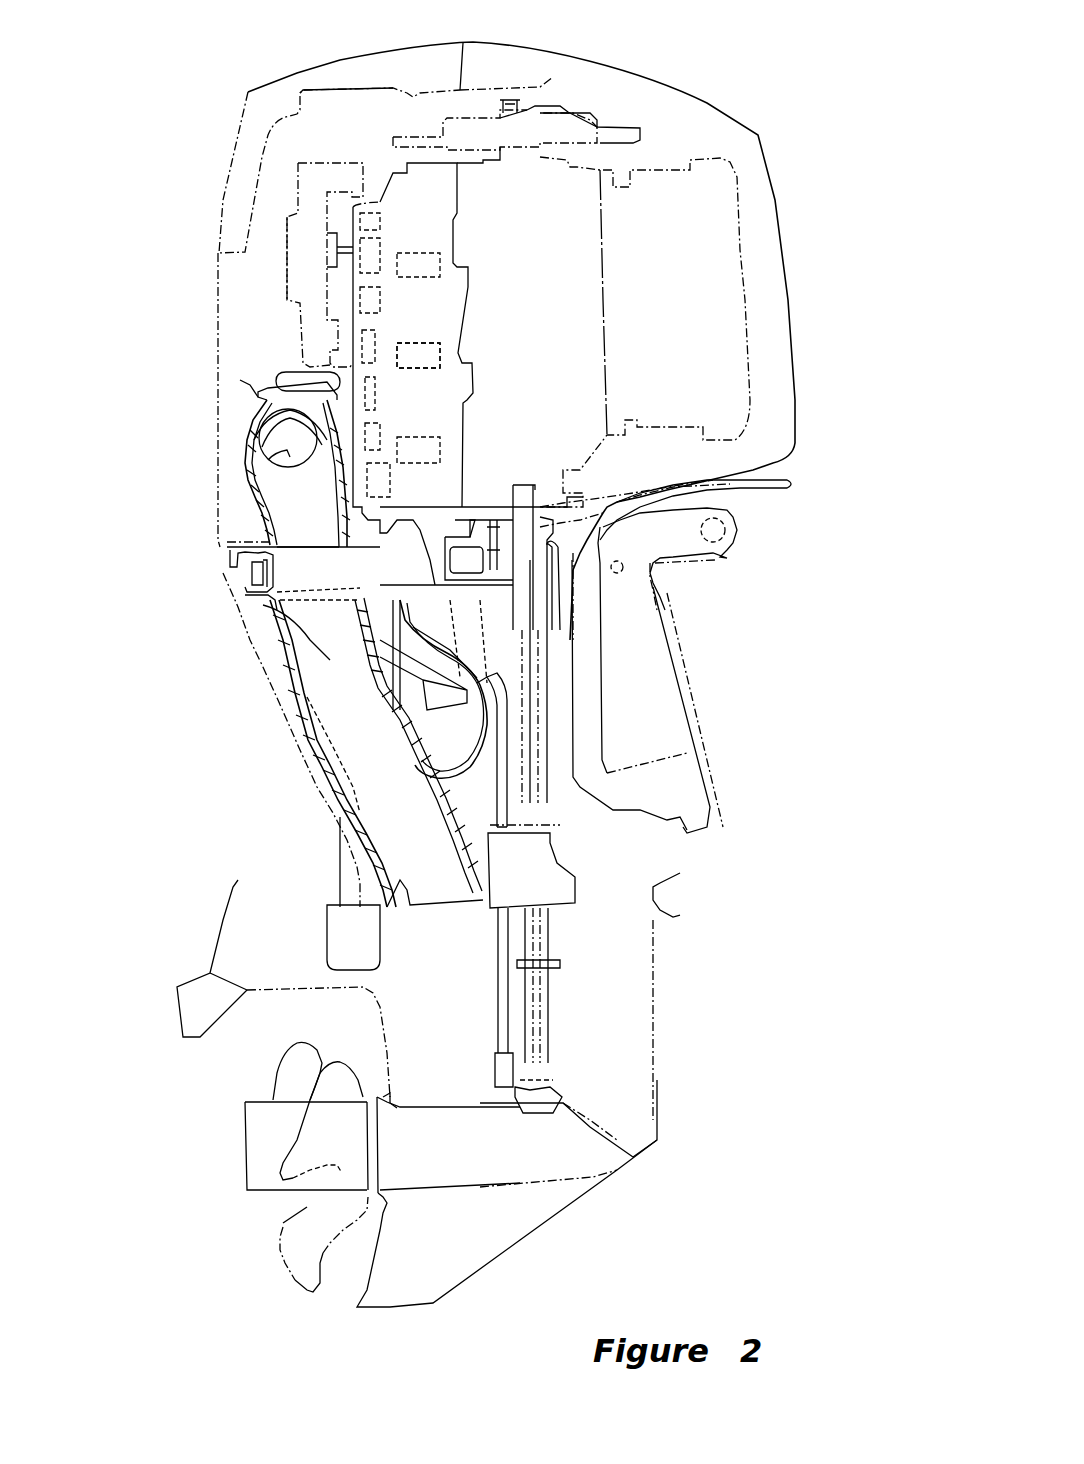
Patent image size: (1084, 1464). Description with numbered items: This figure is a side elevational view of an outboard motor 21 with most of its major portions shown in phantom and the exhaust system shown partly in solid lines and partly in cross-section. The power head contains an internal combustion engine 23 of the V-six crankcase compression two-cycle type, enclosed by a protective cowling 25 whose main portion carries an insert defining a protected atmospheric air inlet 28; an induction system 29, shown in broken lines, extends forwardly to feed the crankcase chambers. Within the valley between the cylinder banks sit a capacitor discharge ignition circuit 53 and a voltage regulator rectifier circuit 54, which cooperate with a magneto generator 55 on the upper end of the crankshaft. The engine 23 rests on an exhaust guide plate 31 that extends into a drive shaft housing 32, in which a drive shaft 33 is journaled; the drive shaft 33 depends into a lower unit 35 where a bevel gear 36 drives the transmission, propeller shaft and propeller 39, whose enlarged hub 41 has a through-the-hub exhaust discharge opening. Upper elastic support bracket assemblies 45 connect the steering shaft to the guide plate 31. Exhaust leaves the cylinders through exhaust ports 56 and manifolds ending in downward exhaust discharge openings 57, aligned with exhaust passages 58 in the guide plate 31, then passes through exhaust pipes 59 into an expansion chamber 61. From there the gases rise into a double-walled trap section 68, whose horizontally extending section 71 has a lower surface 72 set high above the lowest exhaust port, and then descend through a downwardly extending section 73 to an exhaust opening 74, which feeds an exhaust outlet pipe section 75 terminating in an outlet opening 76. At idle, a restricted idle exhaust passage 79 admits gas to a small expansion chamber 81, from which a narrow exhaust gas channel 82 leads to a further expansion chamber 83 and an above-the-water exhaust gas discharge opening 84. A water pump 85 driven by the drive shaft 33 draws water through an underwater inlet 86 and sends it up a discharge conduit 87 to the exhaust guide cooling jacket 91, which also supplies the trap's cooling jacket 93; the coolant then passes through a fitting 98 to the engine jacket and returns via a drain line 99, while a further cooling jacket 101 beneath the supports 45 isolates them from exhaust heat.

The outboard motor 21 is at (838, 348).
The internal combustion engine 23 is at (437, 122).
The protective cowling 25 is at (245, 107).
The atmospheric air inlet 28 is at (325, 93).
The induction system 29 is at (707, 158).
The exhaust guide plate 31 is at (487, 508).
The drive shaft housing 32 is at (238, 880).
The drive shaft 33 is at (538, 930).
The lower unit 35 is at (667, 1063).
The bevel gear 36 is at (560, 1103).
The propeller 39 is at (277, 1068).
The enlarged hub 41 is at (268, 1197).
The upper elastic support bracket assemblies 45 is at (527, 482).
The capacitor discharge ignition circuit 53 is at (287, 270).
The voltage regulator rectifier circuit 54 is at (313, 162).
The magneto generator 55 is at (573, 110).
The exhaust ports 56 is at (373, 393).
The exhaust discharge openings 57 is at (387, 513).
The exhaust passages 58 is at (447, 518).
The exhaust pipes 59 is at (390, 733).
The expansion chamber 61 is at (457, 750).
The trap section 68 is at (242, 443).
The horizontally extending section 71 is at (277, 423).
The lower surface 72 is at (267, 458).
The downwardly extending section 73 is at (267, 512).
The exhaust opening 74 is at (267, 535).
The exhaust outlet pipe section 75 is at (287, 697).
The outlet opening 76 is at (390, 877).
The restricted idle exhaust passage 79 is at (367, 658).
The small expansion chamber 81 is at (330, 640).
The exhaust gas channel 82 is at (250, 633).
The expansion chamber 83 is at (262, 597).
The above-the-water exhaust gas discharge opening 84 is at (242, 577).
The water pump 85 is at (580, 887).
The underwater inlet 86 is at (497, 1073).
The discharge conduit 87 is at (498, 735).
The exhaust guide cooling jacket 91 is at (300, 622).
The cooling jacket 93 is at (240, 380).
The fitting 98 is at (300, 373).
The drain line 99 is at (348, 885).
The cooling jacket 101 is at (490, 570).